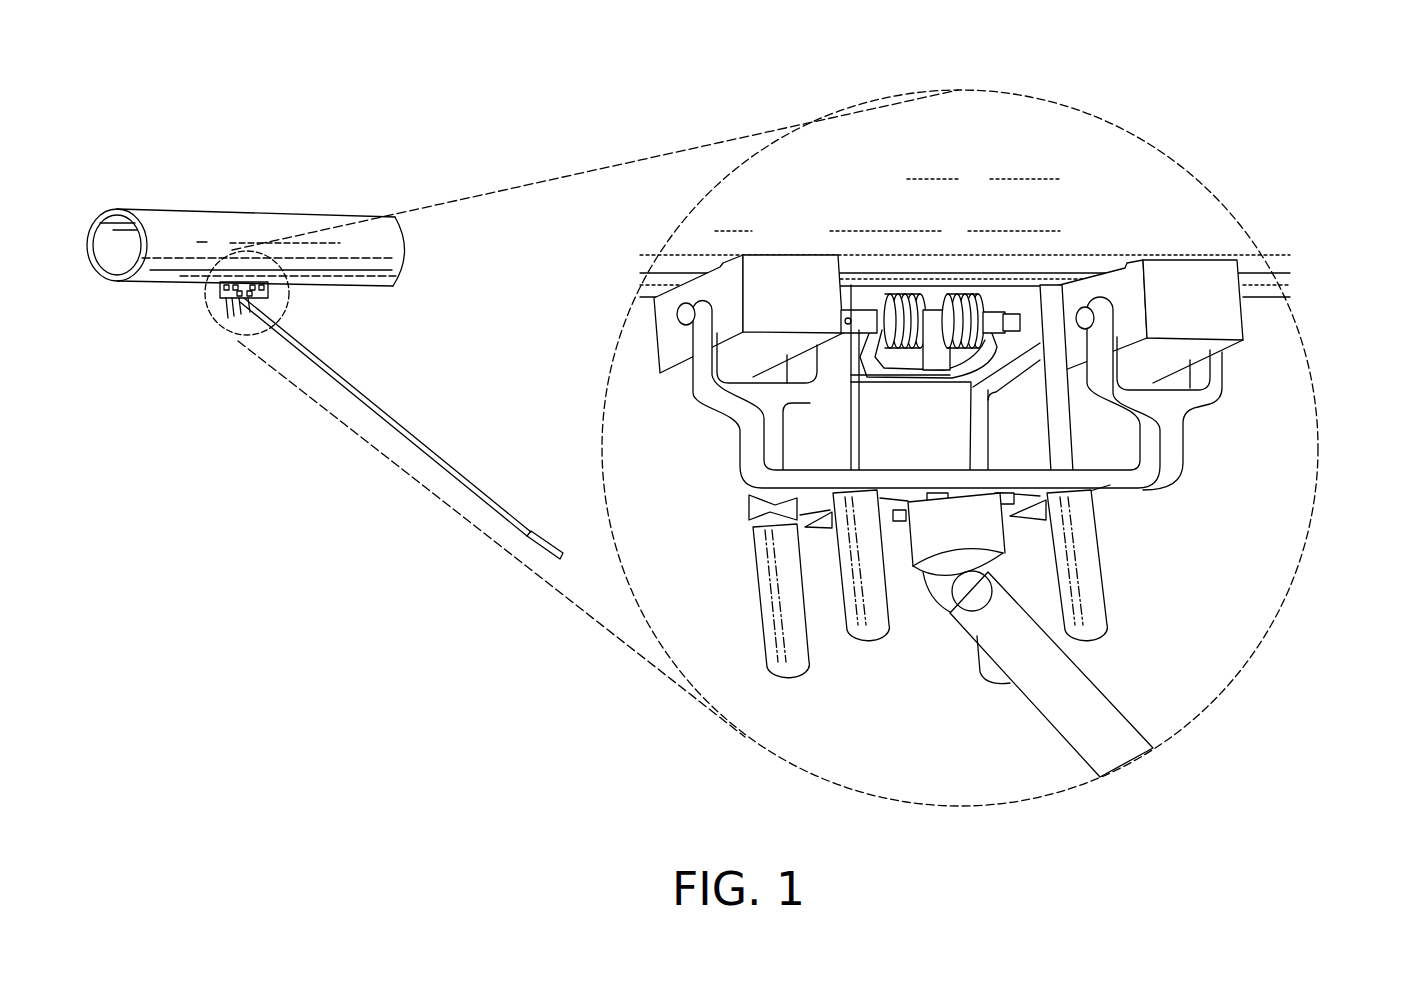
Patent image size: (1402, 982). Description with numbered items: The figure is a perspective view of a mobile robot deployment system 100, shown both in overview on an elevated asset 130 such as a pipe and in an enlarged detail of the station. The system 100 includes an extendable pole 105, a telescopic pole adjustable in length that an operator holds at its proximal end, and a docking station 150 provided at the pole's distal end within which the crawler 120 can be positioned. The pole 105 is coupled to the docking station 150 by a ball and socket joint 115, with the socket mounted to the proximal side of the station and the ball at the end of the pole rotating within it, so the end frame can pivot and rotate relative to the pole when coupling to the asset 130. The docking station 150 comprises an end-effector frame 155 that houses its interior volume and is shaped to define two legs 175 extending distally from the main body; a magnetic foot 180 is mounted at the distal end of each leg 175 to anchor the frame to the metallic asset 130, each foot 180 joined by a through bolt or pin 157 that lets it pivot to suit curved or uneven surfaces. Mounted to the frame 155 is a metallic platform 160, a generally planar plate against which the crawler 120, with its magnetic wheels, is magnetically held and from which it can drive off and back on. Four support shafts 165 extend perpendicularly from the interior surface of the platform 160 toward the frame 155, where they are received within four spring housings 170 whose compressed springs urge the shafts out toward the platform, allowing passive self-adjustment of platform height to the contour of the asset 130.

The mobile robot deployment system 100 is at (593, 110).
The extendable pole 105 is at (407, 440).
The ball and socket joint 115 is at (950, 567).
The crawler 120 is at (933, 323).
The asset 130 is at (213, 210).
The docking station 150 is at (200, 313).
The end-effector frame 155 is at (958, 480).
The through bolt or pin 157 is at (675, 318).
The metallic platform 160 is at (880, 297).
The support shafts 165 is at (757, 505).
The spring housings 170 is at (1110, 545).
The legs 175 is at (1225, 367).
The magnetic foot 180 is at (791, 267).